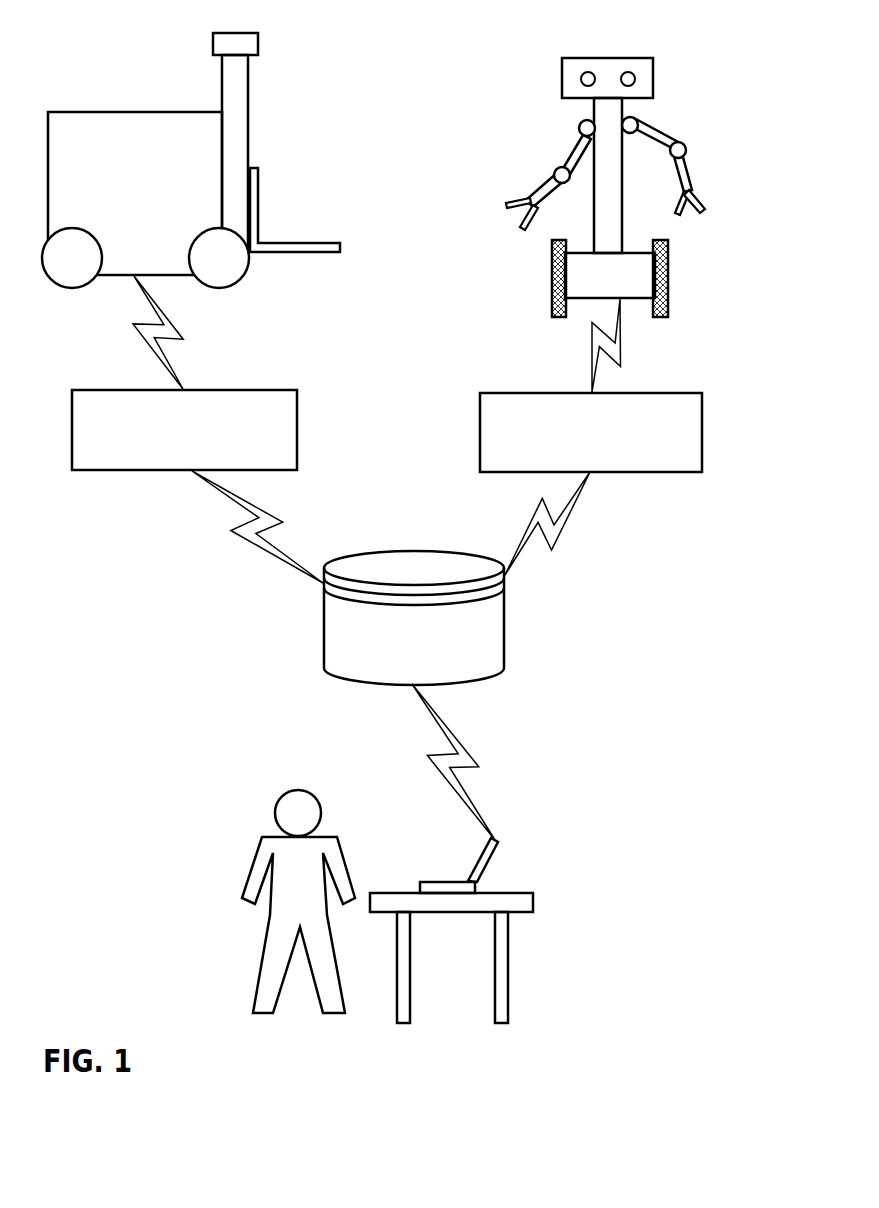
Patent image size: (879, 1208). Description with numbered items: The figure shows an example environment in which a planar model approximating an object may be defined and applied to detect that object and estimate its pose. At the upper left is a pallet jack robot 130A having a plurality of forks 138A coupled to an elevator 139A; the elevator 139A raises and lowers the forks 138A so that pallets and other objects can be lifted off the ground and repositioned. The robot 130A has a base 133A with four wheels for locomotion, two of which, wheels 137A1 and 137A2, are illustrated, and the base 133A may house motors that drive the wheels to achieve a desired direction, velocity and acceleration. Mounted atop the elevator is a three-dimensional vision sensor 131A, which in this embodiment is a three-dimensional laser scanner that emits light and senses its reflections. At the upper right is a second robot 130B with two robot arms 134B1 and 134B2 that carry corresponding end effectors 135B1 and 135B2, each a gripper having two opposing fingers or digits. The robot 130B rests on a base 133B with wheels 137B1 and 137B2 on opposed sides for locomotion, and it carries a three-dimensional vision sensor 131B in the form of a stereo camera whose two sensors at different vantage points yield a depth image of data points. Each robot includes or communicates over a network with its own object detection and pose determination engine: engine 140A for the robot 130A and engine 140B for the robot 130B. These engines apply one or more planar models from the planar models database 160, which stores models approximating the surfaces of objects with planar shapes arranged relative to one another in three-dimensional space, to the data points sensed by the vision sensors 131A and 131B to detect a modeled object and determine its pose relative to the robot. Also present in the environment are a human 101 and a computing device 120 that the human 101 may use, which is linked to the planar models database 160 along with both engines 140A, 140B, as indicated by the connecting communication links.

The human 101 is at (343, 843).
The computing device 120 is at (505, 862).
The robot 130A is at (333, 83).
The robot 130B is at (713, 84).
The three-dimensional vision sensor 131A is at (212, 42).
The three-dimensional vision sensor 131B is at (628, 72).
The base 133A is at (90, 112).
The base 133B is at (585, 252).
The robot arm 134B1 is at (539, 185).
The robot arm 134B2 is at (706, 157).
The end effector 135B1 is at (520, 215).
The end effector 135B2 is at (701, 195).
The wheel 137A1 is at (72, 260).
The wheel 137A2 is at (220, 262).
The wheel 137B1 is at (552, 275).
The wheel 137B2 is at (668, 279).
The forks 138A is at (293, 242).
The elevator 139A is at (250, 150).
The object detection and pose determination engine 140A is at (184, 430).
The object detection and pose determination engine 140B is at (591, 432).
The planar models database 160 is at (414, 618).